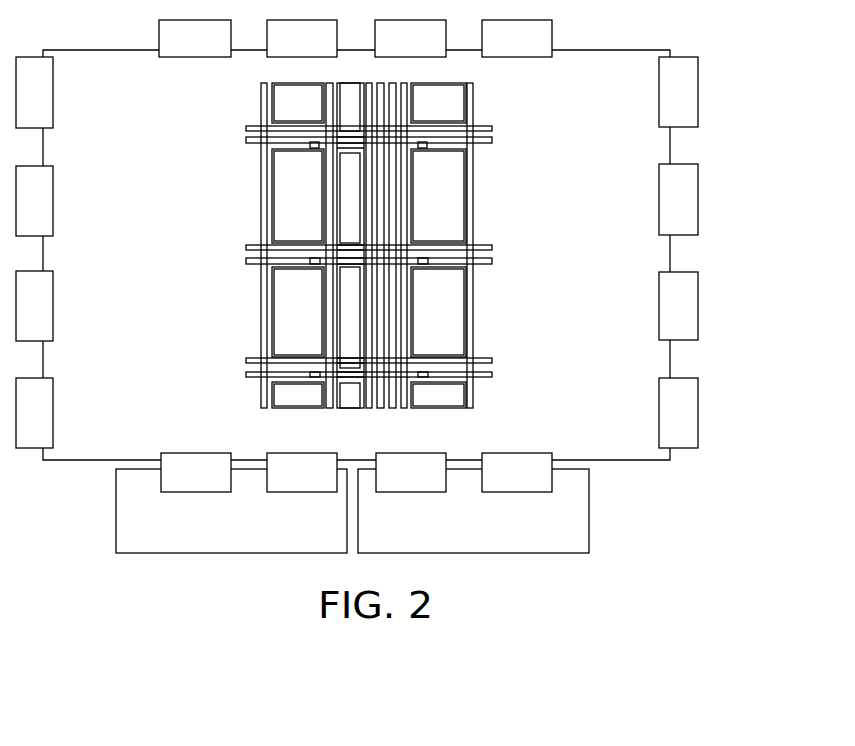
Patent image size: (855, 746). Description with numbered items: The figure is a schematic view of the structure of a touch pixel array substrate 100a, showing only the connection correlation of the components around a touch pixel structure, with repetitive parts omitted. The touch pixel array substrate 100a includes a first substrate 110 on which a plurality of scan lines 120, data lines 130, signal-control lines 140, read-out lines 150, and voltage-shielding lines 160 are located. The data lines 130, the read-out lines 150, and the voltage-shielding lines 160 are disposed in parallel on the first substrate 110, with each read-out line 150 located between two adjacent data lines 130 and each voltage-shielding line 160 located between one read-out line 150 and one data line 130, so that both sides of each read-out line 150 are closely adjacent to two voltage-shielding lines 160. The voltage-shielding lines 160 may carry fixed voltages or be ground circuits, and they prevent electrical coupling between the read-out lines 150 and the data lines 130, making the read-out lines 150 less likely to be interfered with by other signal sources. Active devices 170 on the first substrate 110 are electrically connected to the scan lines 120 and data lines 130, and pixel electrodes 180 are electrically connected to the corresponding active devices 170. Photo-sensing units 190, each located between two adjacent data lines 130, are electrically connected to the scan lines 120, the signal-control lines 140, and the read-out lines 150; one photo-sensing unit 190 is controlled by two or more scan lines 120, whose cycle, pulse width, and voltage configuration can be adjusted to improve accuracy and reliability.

The touch pixel array substrate 100a is at (676, 253).
The first substrate 110 is at (657, 143).
The scan lines 120 is at (485, 262).
The data lines 130 is at (263, 95).
The signal-control lines 140 is at (485, 247).
The read-out lines 150 is at (380, 195).
The voltage-shielding lines 160 is at (395, 163).
The active devices 170 is at (307, 149).
The pixel electrodes 180 is at (282, 198).
The photo-sensing units 190 is at (348, 285).